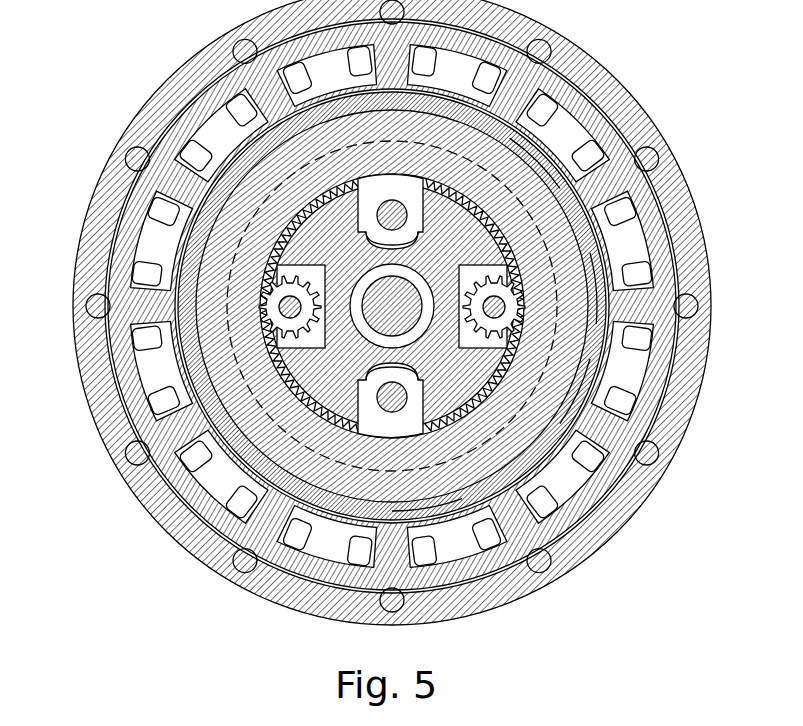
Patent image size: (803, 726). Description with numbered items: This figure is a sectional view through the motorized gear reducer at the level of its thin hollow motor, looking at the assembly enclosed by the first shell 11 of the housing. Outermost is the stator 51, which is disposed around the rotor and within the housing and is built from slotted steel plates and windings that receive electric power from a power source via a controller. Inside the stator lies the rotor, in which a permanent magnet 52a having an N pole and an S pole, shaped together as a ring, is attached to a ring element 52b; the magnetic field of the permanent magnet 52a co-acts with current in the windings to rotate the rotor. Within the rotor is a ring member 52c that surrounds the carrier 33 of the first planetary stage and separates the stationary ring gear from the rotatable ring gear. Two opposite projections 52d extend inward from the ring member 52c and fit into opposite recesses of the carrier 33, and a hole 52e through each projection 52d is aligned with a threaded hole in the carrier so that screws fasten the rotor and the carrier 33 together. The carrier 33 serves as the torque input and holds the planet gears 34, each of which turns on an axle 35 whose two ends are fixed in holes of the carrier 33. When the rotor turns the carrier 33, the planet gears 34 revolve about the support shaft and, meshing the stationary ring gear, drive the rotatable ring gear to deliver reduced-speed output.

The first shell 11 is at (207, 63).
The carrier 33 is at (238, 150).
The stator 51 is at (182, 178).
The axle 35 is at (287, 312).
The planet gear 34 is at (298, 430).
The permanent magnet 52a is at (502, 127).
The ring element 52b is at (550, 158).
The ring member 52c is at (540, 253).
The projection 52d is at (432, 536).
The hole 52e is at (578, 391).